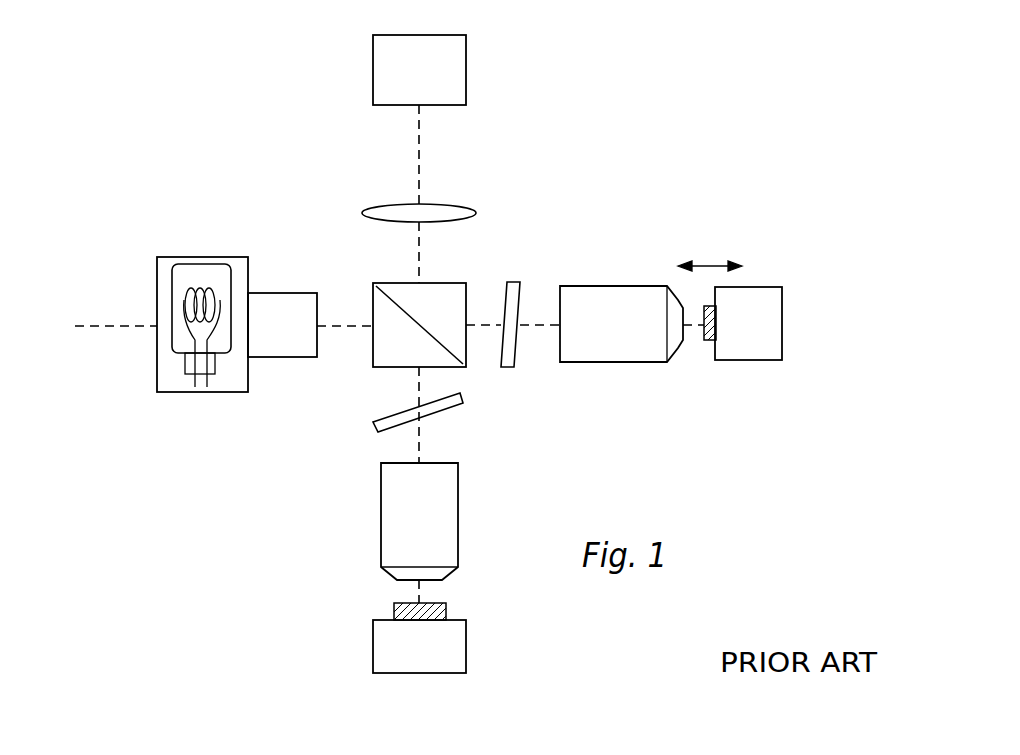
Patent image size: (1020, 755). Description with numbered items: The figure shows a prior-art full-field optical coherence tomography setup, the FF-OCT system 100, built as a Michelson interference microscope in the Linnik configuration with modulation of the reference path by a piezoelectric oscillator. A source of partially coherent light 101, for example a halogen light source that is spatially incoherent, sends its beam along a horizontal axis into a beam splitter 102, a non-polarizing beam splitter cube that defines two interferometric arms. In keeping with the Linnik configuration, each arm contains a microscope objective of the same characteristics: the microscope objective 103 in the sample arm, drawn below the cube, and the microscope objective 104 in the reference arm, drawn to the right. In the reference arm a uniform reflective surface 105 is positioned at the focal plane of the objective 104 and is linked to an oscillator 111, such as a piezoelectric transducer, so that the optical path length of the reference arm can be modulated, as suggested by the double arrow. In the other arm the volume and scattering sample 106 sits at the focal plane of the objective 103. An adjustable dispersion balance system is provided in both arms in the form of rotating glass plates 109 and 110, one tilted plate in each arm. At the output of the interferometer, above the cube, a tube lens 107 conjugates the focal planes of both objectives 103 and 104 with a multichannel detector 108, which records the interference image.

The FF-OCT system 100 is at (248, 148).
The source of partially coherent light 101 is at (165, 270).
The beam splitter 102 is at (400, 293).
The microscope objective 103 is at (448, 520).
The microscope objective 104 is at (613, 302).
The uniform reflective surface 105 is at (708, 342).
The volume and scattering sample 106 is at (446, 607).
The tube lens 107 is at (450, 212).
The multichannel detector 108 is at (448, 70).
The rotating glass plate 109 is at (450, 402).
The rotating glass plate 110 is at (512, 283).
The oscillator 111 is at (765, 315).